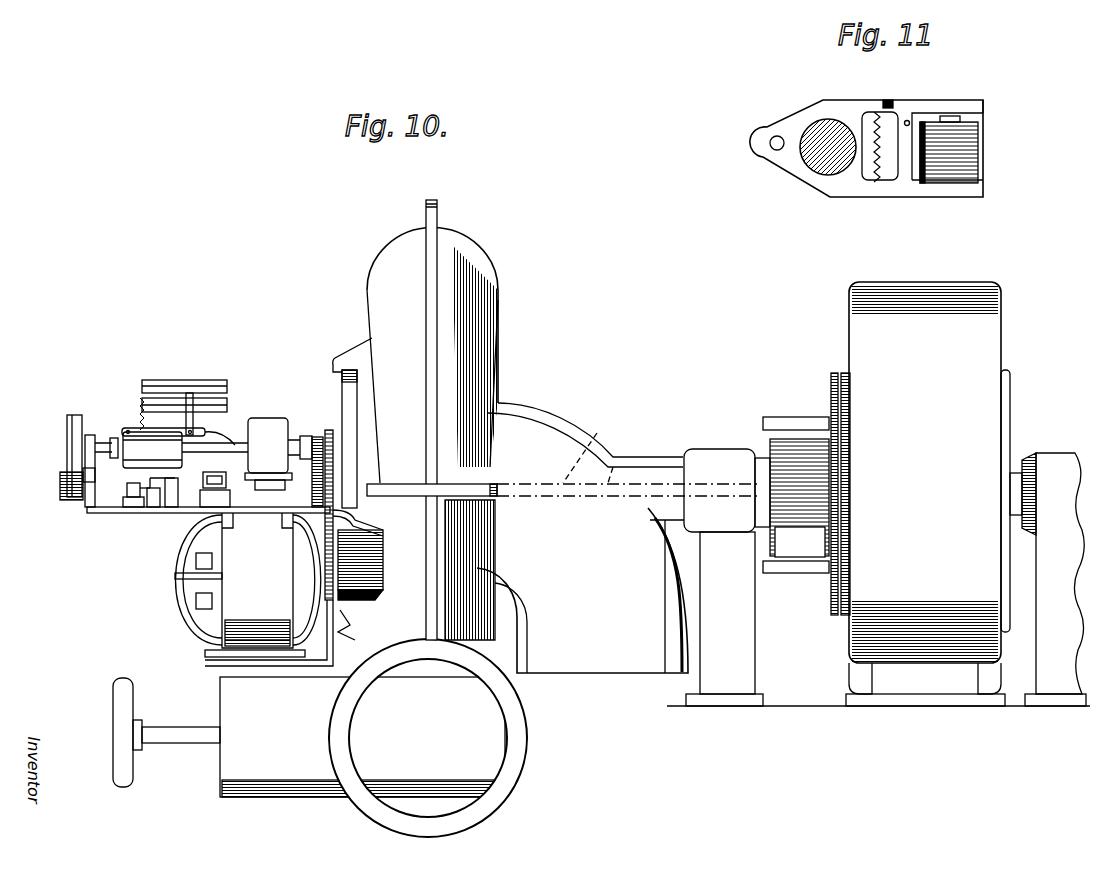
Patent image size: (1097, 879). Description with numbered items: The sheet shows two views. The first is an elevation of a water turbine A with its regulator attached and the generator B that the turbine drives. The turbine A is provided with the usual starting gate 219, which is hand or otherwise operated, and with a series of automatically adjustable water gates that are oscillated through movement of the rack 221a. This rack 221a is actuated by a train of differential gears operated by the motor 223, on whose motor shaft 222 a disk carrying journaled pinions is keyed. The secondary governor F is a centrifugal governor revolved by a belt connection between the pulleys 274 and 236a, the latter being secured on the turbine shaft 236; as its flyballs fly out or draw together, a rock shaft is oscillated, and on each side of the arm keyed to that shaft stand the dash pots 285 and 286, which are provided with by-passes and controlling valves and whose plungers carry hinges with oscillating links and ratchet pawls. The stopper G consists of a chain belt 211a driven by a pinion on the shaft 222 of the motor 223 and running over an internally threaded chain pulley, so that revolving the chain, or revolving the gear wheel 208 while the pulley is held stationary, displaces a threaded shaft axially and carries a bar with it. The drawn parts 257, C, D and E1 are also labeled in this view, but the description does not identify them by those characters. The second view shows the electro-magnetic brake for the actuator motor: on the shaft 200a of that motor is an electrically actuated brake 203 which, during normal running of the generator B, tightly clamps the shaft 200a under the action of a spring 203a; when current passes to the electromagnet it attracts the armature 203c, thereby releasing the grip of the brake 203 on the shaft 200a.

In FIG. 10, the pulley 274 is at (77, 406).
In FIG. 10, the turbine shaft 236 is at (97, 472).
In FIG. 10, the pulley 236a is at (93, 498).
In FIG. 10, the dash pot 285 is at (127, 487).
In FIG. 10, the dash pot 286 is at (170, 500).
In FIG. 10, the gear 257 is at (213, 440).
In FIG. 10, the rack 221a is at (347, 398).
In FIG. 10, the gear wheel 208 is at (337, 473).
In FIG. 10, the chain belt 211a is at (367, 548).
In FIG. 10, the motor shaft 222 is at (360, 593).
In FIG. 10, the motor 223 is at (257, 616).
In FIG. 10, the starting gate 219 is at (185, 733).
In FIG. 11, the motor shaft 200a is at (810, 160).
In FIG. 11, the electrically actuated brake 203 is at (978, 157).
In FIG. 11, the spring 203a is at (880, 175).
In FIG. 11, the armature 203c is at (983, 93).
In FIG. 10, the water turbine A is at (527, 450).
In FIG. 10, the generator B is at (966, 494).
In FIG. 10, the housing C is at (254, 589).
In FIG. 10, the box D is at (268, 454).
In FIG. 10, the solenoid E1 is at (212, 372).
In FIG. 10, the secondary governor F is at (145, 445).
In FIG. 10, the stopper G is at (346, 625).